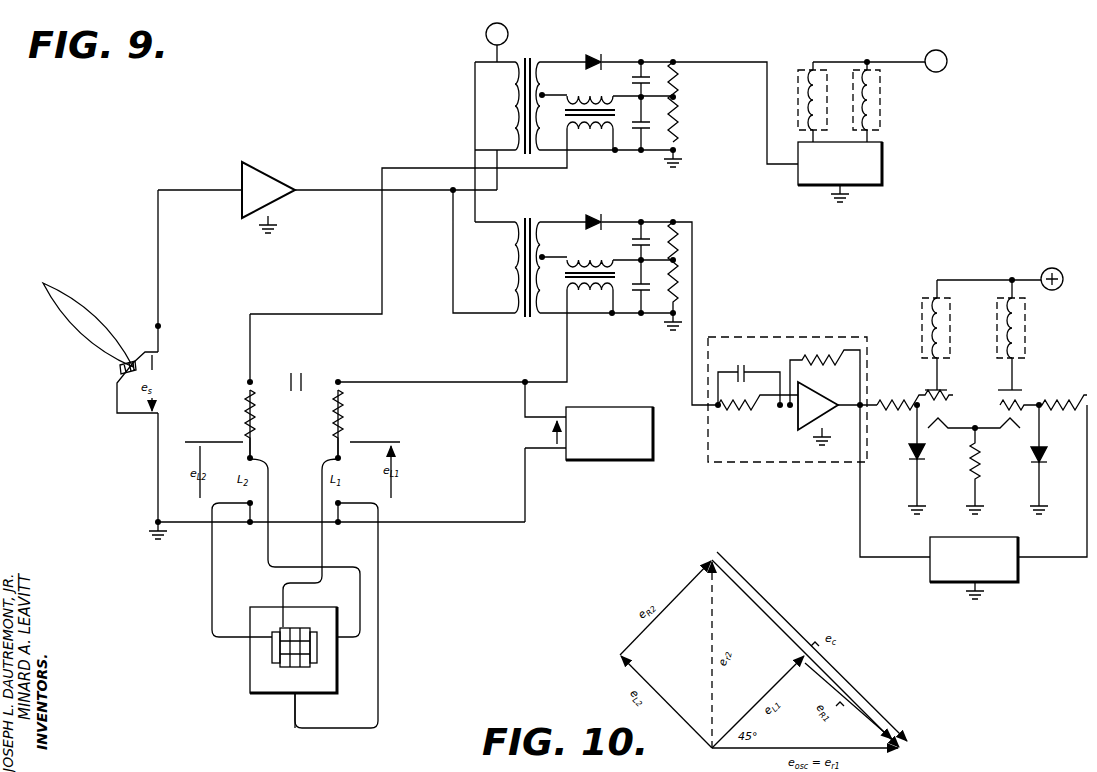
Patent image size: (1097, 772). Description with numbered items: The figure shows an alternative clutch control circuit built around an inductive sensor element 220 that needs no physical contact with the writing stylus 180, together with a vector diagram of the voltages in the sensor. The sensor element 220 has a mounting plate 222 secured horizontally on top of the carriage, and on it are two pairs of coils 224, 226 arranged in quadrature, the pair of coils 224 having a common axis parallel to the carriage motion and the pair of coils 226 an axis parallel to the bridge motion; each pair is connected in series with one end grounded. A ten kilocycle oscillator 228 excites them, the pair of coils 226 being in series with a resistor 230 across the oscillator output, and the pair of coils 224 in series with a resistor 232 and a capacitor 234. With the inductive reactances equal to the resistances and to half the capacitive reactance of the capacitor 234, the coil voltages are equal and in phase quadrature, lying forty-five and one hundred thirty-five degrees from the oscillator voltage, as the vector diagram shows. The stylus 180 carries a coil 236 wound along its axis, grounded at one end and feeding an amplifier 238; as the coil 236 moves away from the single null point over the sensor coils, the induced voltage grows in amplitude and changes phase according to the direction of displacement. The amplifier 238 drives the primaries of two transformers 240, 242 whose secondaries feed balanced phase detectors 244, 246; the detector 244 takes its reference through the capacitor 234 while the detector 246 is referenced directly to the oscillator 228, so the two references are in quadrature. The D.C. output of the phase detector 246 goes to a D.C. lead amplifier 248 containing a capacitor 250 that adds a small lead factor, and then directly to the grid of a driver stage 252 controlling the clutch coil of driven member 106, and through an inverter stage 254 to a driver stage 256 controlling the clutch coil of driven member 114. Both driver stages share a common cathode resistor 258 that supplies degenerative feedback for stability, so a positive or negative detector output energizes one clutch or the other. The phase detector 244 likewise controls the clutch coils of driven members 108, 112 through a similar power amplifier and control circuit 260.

The stylus 180 is at (77, 302).
The coil 236 is at (117, 364).
The amplifier 238 is at (257, 163).
The transformer 240 is at (605, 122).
The transformer 242 is at (585, 297).
The balanced phase detector circuit 244 is at (601, 87).
The balanced phase detector 246 is at (601, 246).
The resistor 232 is at (247, 413).
The resistor 230 is at (341, 418).
The capacitor 234 is at (294, 371).
The oscillator 228 is at (582, 460).
The sensor element 220 is at (311, 597).
The mounting plate 222 is at (262, 684).
The pair of coils 224 is at (286, 640).
The pair of coils 226 is at (285, 694).
The D.C. lead amplifier 248 is at (792, 410).
The capacitor 250 is at (748, 363).
The driver stage 252 is at (925, 392).
The driver stage 256 is at (1018, 397).
The common cathode resistor 258 is at (970, 457).
The inverter stage 254 is at (1003, 538).
The power amplifier and control circuit 260 is at (882, 161).
The driven member 108 is at (798, 90).
The driven member 112 is at (881, 108).
The driven member 106 is at (922, 318).
The driven member 114 is at (998, 337).